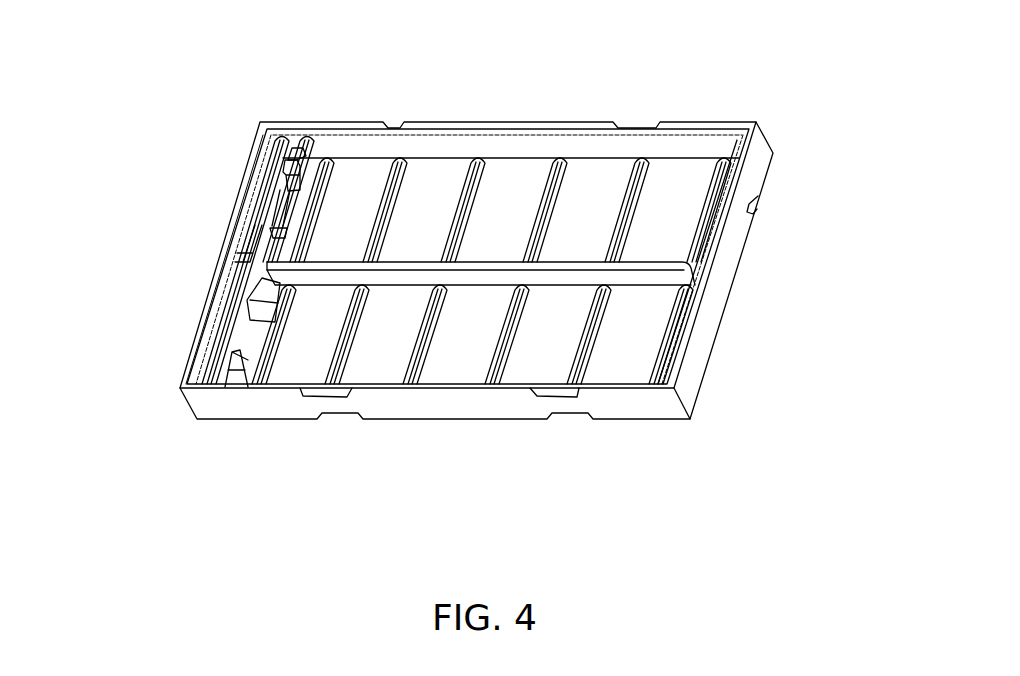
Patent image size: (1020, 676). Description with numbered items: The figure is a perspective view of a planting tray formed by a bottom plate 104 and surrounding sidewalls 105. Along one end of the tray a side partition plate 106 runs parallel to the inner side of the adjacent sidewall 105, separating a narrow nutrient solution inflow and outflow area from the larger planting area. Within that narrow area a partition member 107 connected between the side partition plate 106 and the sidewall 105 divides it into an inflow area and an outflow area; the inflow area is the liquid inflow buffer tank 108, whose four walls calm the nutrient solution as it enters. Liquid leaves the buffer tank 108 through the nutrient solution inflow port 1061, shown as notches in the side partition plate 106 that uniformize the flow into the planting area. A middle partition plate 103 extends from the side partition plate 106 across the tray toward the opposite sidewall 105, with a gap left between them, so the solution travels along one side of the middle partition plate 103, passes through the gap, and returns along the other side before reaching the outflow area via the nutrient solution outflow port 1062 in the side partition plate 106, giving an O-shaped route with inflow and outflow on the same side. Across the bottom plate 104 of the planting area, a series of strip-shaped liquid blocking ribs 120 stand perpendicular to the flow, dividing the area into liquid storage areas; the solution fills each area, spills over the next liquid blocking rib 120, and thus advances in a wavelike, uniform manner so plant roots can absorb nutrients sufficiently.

The middle partition plate 103 is at (388, 274).
The bottom plate 104 is at (543, 343).
The sidewall 105 is at (718, 266).
The side partition plate 106 is at (285, 212).
The partition member 107 is at (255, 226).
The liquid inflow buffer tank 108 is at (283, 183).
The liquid blocking rib 120 is at (490, 163).
The nutrient solution inflow port 1061 is at (298, 178).
The nutrient solution outflow port 1062 is at (245, 342).